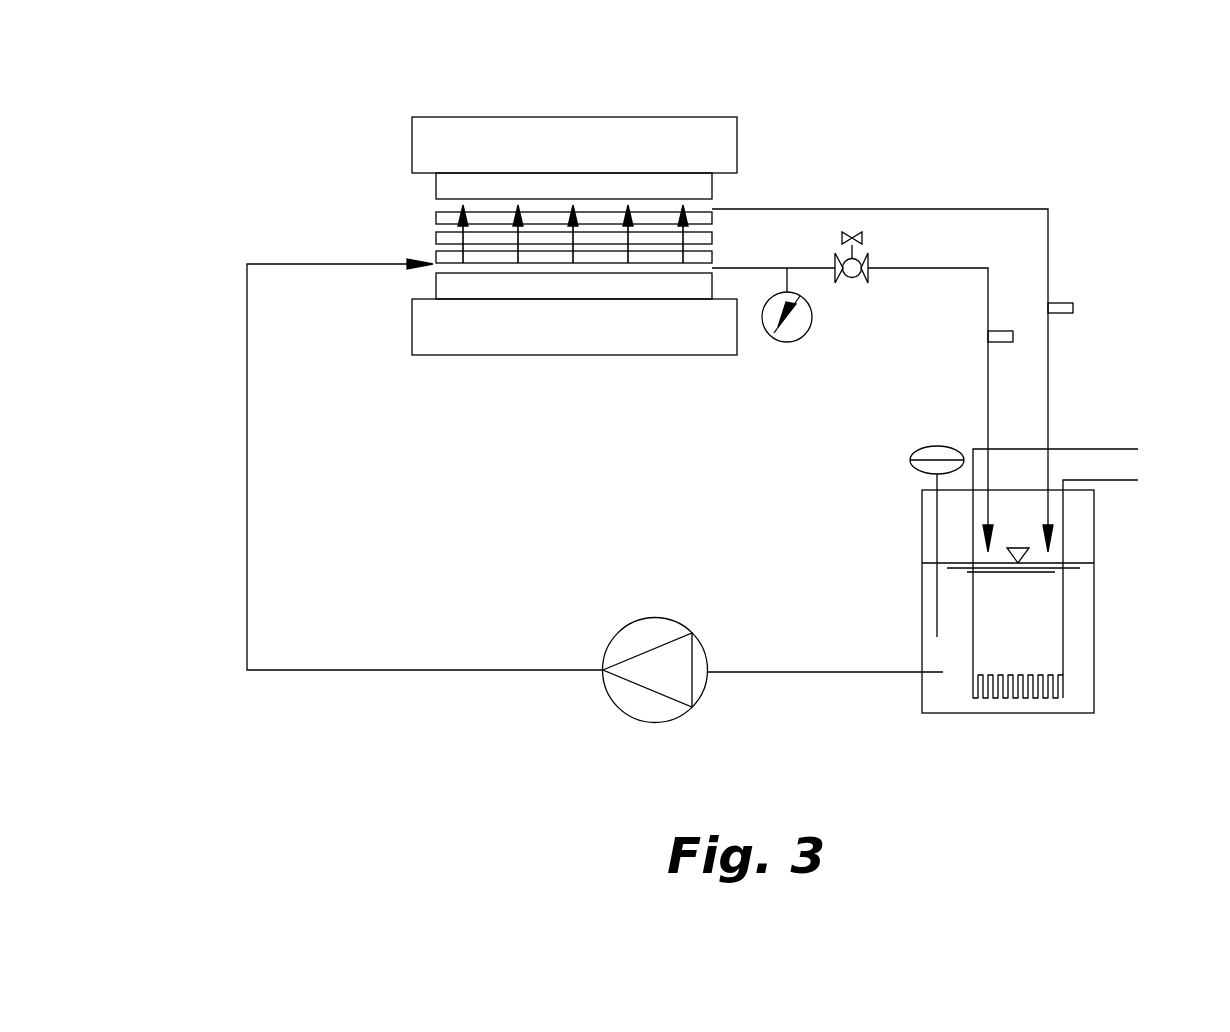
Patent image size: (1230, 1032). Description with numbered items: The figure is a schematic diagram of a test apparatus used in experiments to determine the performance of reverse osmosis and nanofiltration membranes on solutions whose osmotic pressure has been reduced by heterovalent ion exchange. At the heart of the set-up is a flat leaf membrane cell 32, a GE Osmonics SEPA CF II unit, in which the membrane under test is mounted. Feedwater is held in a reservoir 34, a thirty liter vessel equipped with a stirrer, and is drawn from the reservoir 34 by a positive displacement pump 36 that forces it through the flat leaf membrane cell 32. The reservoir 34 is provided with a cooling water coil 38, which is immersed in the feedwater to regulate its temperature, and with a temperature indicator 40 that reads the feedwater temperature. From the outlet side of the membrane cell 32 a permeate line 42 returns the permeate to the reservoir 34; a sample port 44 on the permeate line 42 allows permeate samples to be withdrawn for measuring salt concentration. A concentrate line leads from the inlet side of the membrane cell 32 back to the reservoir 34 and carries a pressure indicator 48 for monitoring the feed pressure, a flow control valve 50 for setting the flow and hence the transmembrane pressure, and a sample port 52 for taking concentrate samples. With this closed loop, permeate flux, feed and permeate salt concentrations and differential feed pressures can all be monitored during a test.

The flat leaf membrane cell 32 is at (690, 115).
The reservoir 34 is at (1094, 607).
The positive displacement pump 36 is at (692, 707).
The cooling water coil 38 is at (1063, 688).
The temperature indicator 40 is at (917, 471).
The permeate line 42 is at (988, 209).
The sample port 44 is at (1063, 303).
The pressure indicator 48 is at (787, 342).
The flow control valve 50 is at (868, 253).
The sample port 52 is at (1003, 343).